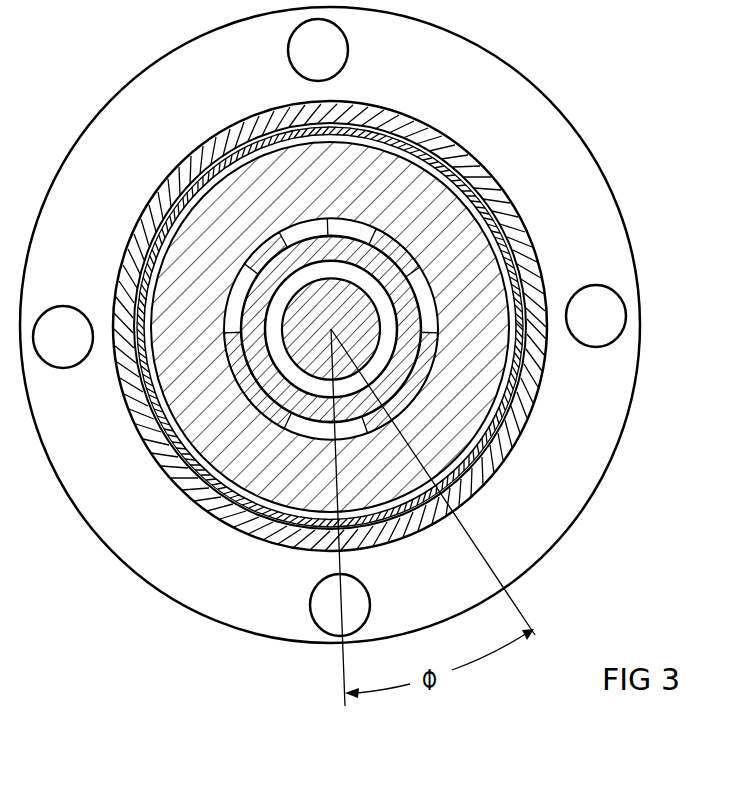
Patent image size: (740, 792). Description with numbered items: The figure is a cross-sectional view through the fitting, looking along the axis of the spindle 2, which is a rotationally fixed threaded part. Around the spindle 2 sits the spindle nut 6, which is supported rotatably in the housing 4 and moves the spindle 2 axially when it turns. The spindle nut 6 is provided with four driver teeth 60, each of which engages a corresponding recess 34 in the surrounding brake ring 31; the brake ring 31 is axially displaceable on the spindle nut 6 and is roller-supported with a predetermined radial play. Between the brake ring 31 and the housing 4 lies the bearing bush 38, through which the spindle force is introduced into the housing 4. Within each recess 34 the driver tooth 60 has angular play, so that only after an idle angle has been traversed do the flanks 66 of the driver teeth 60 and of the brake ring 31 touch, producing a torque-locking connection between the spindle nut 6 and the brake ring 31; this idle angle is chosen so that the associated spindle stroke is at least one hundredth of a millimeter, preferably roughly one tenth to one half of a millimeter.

The spindle 2 is at (307, 298).
The housing 4 is at (62, 445).
The spindle nut 6 is at (303, 254).
The brake ring 31 is at (460, 434).
The recess 34 is at (420, 272).
The bearing bush 38 is at (124, 279).
The driver teeth 60 is at (427, 350).
The flanks 66 is at (445, 240).